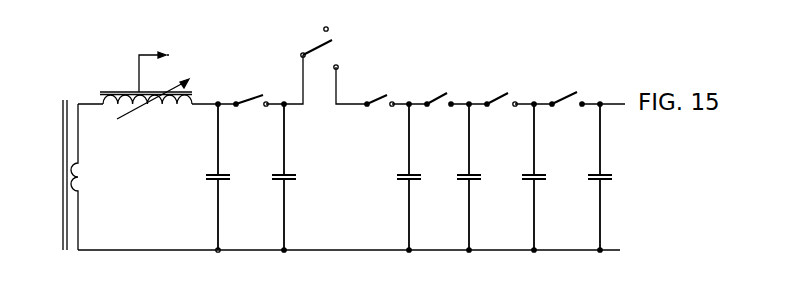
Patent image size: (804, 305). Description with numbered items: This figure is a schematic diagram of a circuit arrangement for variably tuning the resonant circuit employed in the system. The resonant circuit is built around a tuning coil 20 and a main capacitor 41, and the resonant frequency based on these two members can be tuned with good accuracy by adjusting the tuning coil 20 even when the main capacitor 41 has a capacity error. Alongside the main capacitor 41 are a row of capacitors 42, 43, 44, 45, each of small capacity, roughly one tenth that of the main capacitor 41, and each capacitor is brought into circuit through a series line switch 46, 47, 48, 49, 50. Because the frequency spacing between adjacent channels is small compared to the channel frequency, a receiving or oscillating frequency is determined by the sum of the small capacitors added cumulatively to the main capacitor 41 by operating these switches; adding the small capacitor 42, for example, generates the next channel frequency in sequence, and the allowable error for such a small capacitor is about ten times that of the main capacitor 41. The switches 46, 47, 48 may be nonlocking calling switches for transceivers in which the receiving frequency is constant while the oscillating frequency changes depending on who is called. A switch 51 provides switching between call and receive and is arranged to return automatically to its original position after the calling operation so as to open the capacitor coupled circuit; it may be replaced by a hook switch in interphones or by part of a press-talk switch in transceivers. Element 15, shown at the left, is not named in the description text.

The transformer 15 is at (63, 152).
The tuning coil 20 is at (132, 95).
The main capacitor 41 is at (212, 181).
The capacitor 42 is at (278, 181).
The capacitor 43 is at (404, 181).
The capacitor 44 is at (464, 181).
The capacitor 45 is at (527, 181).
The switch 46 is at (250, 93).
The switch 47 is at (382, 96).
The switch 48 is at (440, 97).
The switch 49 is at (495, 97).
The switch 50 is at (570, 97).
The switch 51 is at (311, 45).